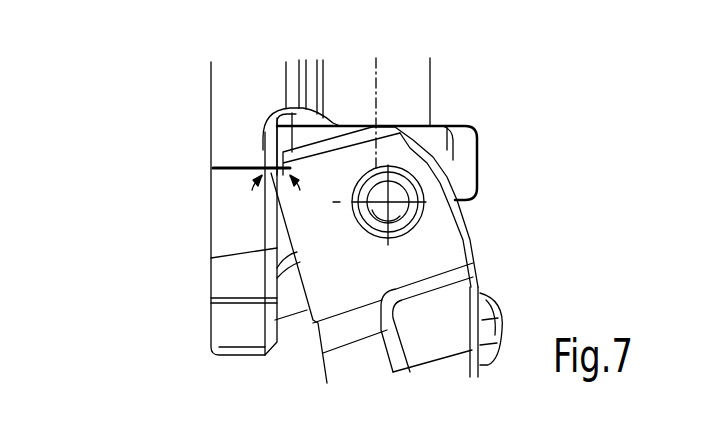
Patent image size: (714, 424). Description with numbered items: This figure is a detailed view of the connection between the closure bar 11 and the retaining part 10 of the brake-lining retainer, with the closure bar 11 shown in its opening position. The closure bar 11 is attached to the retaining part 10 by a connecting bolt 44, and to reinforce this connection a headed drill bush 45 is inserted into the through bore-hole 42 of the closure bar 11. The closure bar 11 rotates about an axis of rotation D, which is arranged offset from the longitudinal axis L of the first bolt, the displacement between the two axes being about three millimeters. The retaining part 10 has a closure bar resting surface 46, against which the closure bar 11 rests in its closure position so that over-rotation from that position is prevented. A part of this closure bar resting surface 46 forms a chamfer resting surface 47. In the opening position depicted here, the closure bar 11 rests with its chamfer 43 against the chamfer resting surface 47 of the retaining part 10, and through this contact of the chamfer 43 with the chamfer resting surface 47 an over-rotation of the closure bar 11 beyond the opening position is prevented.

The retaining part 10 is at (233, 87).
The closure bar 11 is at (480, 257).
The through bore-hole 42 is at (425, 190).
The chamfer 43 is at (272, 167).
The connecting bolt 44 is at (362, 224).
The headed drill bush 45 is at (370, 175).
The closure bar resting surface 46 is at (211, 258).
The chamfer resting surface 47 is at (270, 192).
The longitudinal axis L is at (376, 80).
The axis of rotation D is at (400, 192).